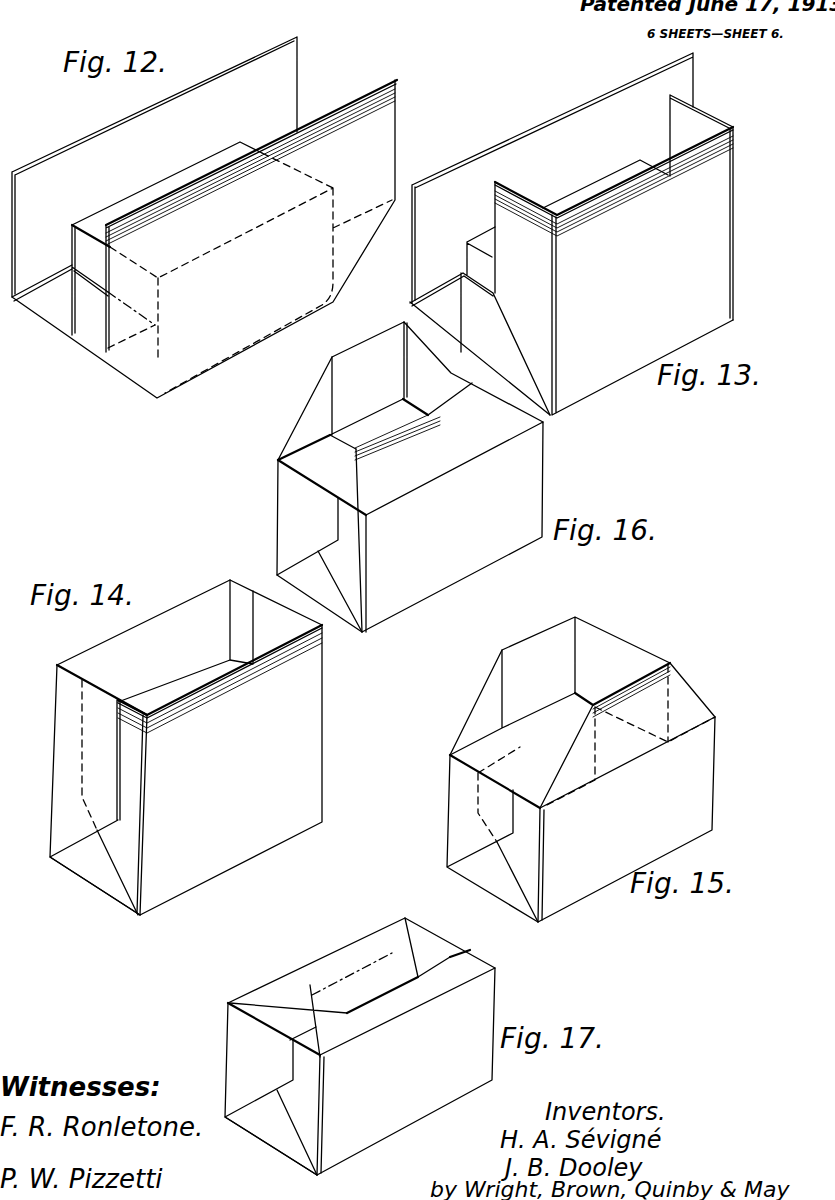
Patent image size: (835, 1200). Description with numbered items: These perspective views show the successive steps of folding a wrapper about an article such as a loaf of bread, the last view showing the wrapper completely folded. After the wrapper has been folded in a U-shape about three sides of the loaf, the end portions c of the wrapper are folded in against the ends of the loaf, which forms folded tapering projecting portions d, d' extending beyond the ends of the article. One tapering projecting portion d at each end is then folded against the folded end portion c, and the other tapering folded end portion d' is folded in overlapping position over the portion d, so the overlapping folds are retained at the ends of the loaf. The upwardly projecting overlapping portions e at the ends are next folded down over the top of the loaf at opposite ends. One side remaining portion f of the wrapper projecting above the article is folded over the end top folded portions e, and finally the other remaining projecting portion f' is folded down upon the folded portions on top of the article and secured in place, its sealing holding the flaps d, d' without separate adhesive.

In FIG. 12, the end portion of the wrapper c is at (90, 315).
In FIG. 13, the end portion of the wrapper c is at (480, 321).
In FIG. 16, the end portion of the wrapper c is at (319, 565).
In FIG. 14, the end portion of the wrapper c is at (108, 872).
In FIG. 15, the end portion of the wrapper c is at (507, 882).
In FIG. 17, the end portion of the wrapper c is at (282, 1132).
In FIG. 12, the folded tapering projecting portion d is at (248, 250).
In FIG. 13, the folded tapering projecting portion d is at (614, 271).
In FIG. 16, the folded tapering projecting portion d is at (446, 527).
In FIG. 14, the folded tapering projecting portion d is at (220, 770).
In FIG. 15, the folded tapering projecting portion d is at (616, 819).
In FIG. 17, the folded tapering projecting portion d is at (396, 1071).
In FIG. 12, the other tapering folded end portion d' is at (154, 201).
In FIG. 13, the other tapering folded end portion d' is at (528, 184).
In FIG. 16, the other tapering folded end portion d' is at (296, 533).
In FIG. 14, the other tapering folded end portion d' is at (73, 790).
In FIG. 15, the other tapering folded end portion d' is at (469, 834).
In FIG. 17, the other tapering folded end portion d' is at (252, 1089).
In FIG. 16, the upwardly projecting folded or overlapping portion e is at (335, 473).
In FIG. 14, the upwardly projecting folded or overlapping portion e is at (112, 697).
In FIG. 15, the upwardly projecting folded or overlapping portion e is at (623, 673).
In FIG. 17, the upwardly projecting folded or overlapping portion e is at (270, 1017).
In FIG. 16, the side remaining portion of the wrapper f is at (359, 477).
In FIG. 15, the side remaining portion of the wrapper f is at (630, 727).
In FIG. 17, the side remaining portion of the wrapper f is at (409, 957).
In FIG. 16, the other remaining projecting portion (final flap) f' is at (365, 365).
In FIG. 15, the other remaining projecting portion (final flap) f' is at (560, 663).
In FIG. 17, the other remaining projecting portion (final flap) f' is at (365, 942).